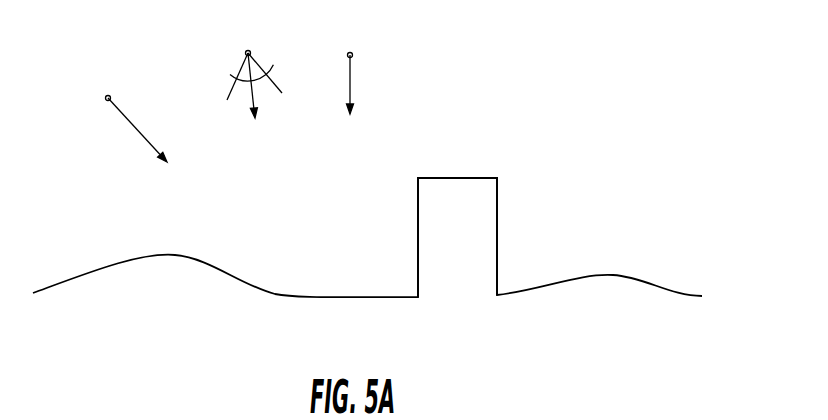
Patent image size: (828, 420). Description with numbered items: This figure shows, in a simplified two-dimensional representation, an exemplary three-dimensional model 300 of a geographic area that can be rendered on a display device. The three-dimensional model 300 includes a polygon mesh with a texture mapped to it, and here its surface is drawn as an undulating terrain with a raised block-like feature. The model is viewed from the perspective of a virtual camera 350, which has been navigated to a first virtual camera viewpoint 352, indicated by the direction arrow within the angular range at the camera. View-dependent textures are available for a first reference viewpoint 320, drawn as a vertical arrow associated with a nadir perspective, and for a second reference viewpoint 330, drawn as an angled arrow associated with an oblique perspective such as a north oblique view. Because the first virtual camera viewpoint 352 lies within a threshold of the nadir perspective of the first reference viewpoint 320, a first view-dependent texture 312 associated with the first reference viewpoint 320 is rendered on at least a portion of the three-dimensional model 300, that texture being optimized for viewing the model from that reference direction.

The three-dimensional model 300 is at (497, 205).
The first view-dependent texture 312 is at (455, 178).
The first reference viewpoint 320 is at (351, 75).
The second reference viewpoint 330 is at (127, 123).
The virtual camera 350 is at (248, 53).
The first virtual camera viewpoint 352 is at (257, 108).